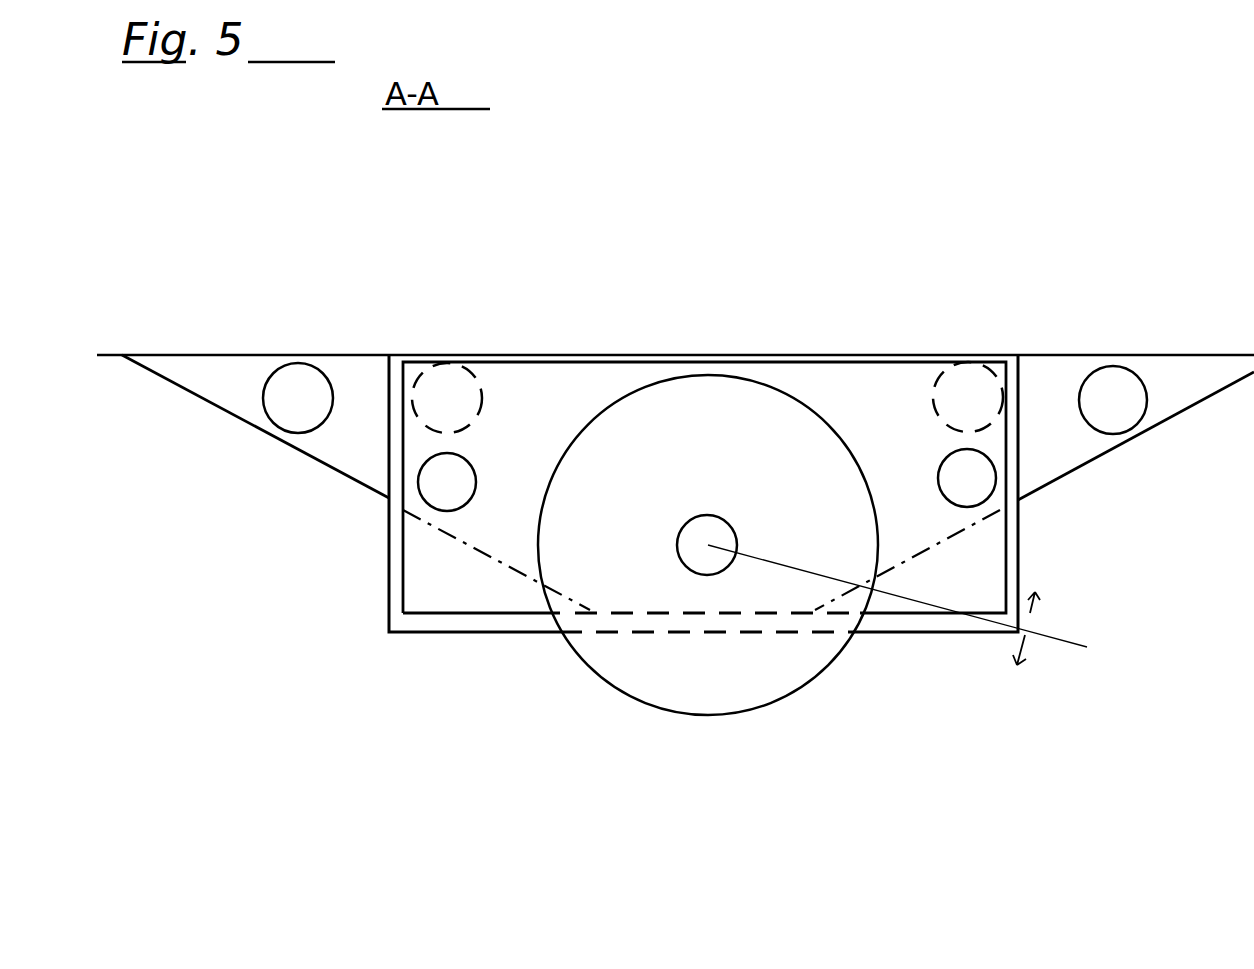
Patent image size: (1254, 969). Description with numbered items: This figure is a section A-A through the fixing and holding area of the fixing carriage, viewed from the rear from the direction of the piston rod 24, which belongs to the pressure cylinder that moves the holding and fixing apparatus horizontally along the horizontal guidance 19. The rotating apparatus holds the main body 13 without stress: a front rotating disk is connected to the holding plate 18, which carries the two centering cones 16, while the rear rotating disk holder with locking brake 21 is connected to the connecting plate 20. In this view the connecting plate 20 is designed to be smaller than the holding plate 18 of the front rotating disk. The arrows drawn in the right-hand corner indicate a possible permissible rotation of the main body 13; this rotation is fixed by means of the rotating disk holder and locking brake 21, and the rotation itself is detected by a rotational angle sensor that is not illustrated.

The main body 13 is at (1165, 377).
The centering cones 16 is at (972, 403).
The holding plate 18 is at (389, 565).
The horizontal guidance 19 is at (965, 482).
The connecting plate 20 is at (978, 548).
The rotating disk holder with locking brake 21 is at (685, 437).
The piston rod 24 is at (713, 562).